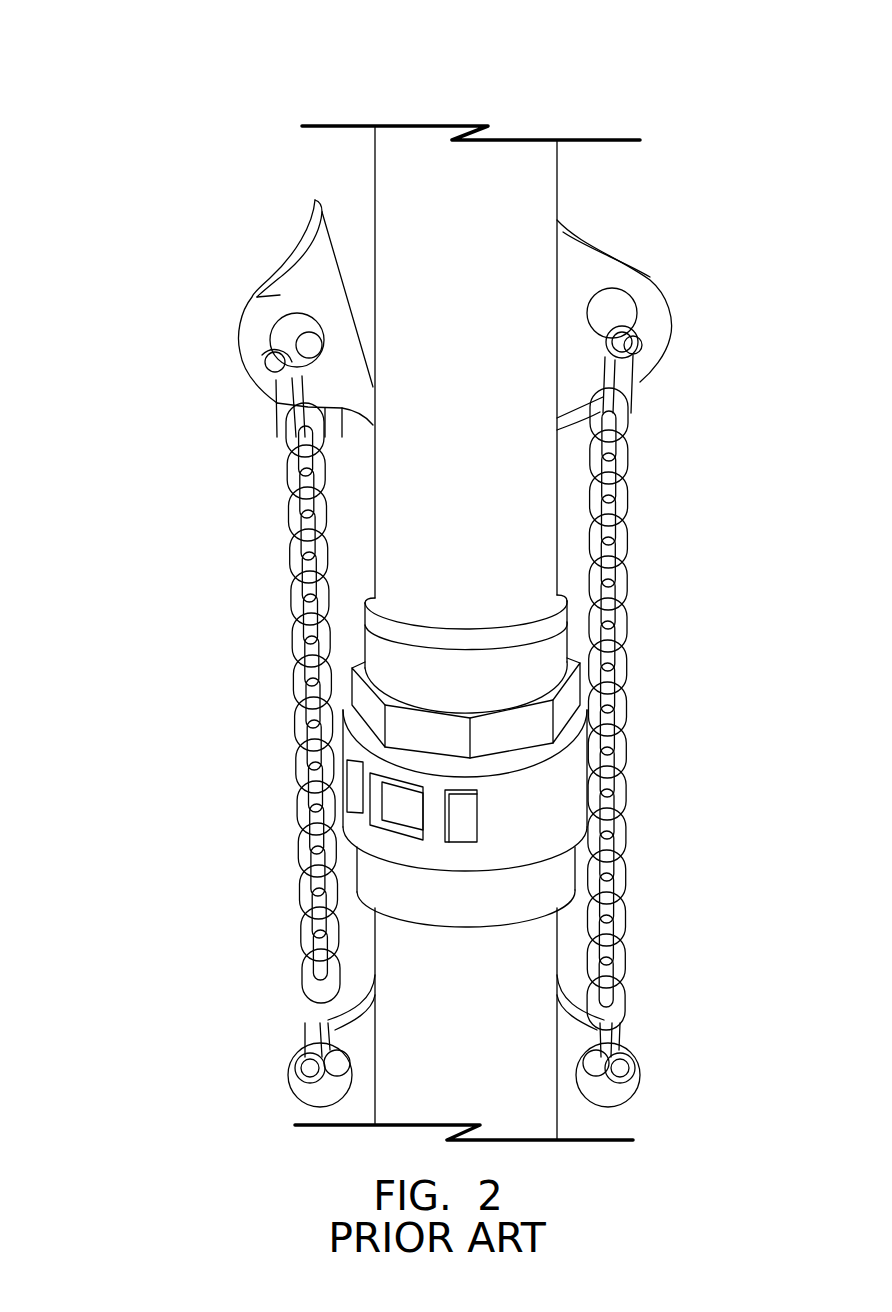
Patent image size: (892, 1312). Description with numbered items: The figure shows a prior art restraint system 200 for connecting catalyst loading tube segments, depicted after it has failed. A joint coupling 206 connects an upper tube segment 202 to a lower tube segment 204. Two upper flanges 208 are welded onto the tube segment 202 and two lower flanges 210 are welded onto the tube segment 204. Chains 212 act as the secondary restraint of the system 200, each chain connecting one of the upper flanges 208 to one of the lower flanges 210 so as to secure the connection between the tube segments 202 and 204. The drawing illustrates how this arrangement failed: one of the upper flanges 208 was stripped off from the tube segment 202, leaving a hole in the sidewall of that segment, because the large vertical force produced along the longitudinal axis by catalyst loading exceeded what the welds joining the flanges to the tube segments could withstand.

The restraint system 200 is at (178, 26).
The tube segment 202 is at (477, 452).
The tube segment 204 is at (490, 1035).
The joint coupling 206 is at (380, 753).
The upper flanges 208 is at (253, 297).
The lower flanges 210 is at (330, 1108).
The chains 212 is at (293, 583).